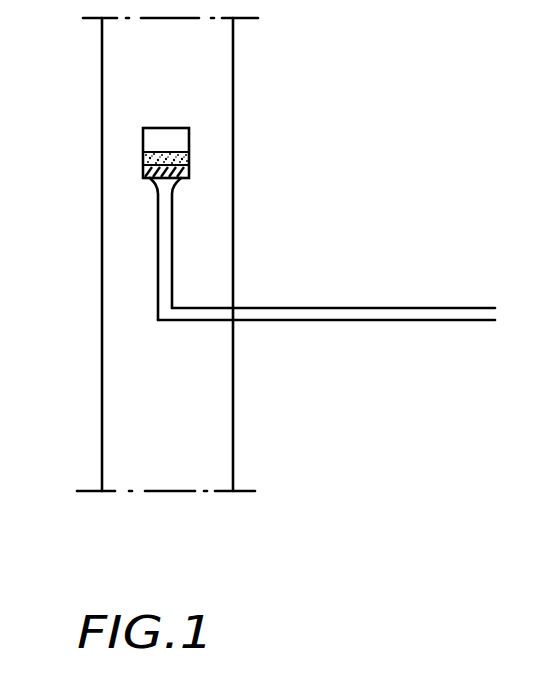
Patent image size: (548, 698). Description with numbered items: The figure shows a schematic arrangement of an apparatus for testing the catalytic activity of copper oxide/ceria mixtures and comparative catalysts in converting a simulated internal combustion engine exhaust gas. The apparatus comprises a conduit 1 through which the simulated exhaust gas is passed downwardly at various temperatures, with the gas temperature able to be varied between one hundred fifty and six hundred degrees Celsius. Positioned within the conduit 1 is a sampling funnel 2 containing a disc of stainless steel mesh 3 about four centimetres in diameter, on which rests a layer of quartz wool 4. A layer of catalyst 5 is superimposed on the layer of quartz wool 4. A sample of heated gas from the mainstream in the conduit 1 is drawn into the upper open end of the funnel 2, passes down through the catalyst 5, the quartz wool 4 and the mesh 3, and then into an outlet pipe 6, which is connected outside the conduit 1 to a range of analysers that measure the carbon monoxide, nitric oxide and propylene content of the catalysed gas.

The conduit 1 is at (213, 75).
The sampling funnel 2 is at (189, 145).
The disc of stainless steel mesh 3 is at (174, 186).
The layer of quartz wool 4 is at (143, 172).
The layer of catalyst 5 is at (143, 160).
The outlet pipe 6 is at (440, 310).